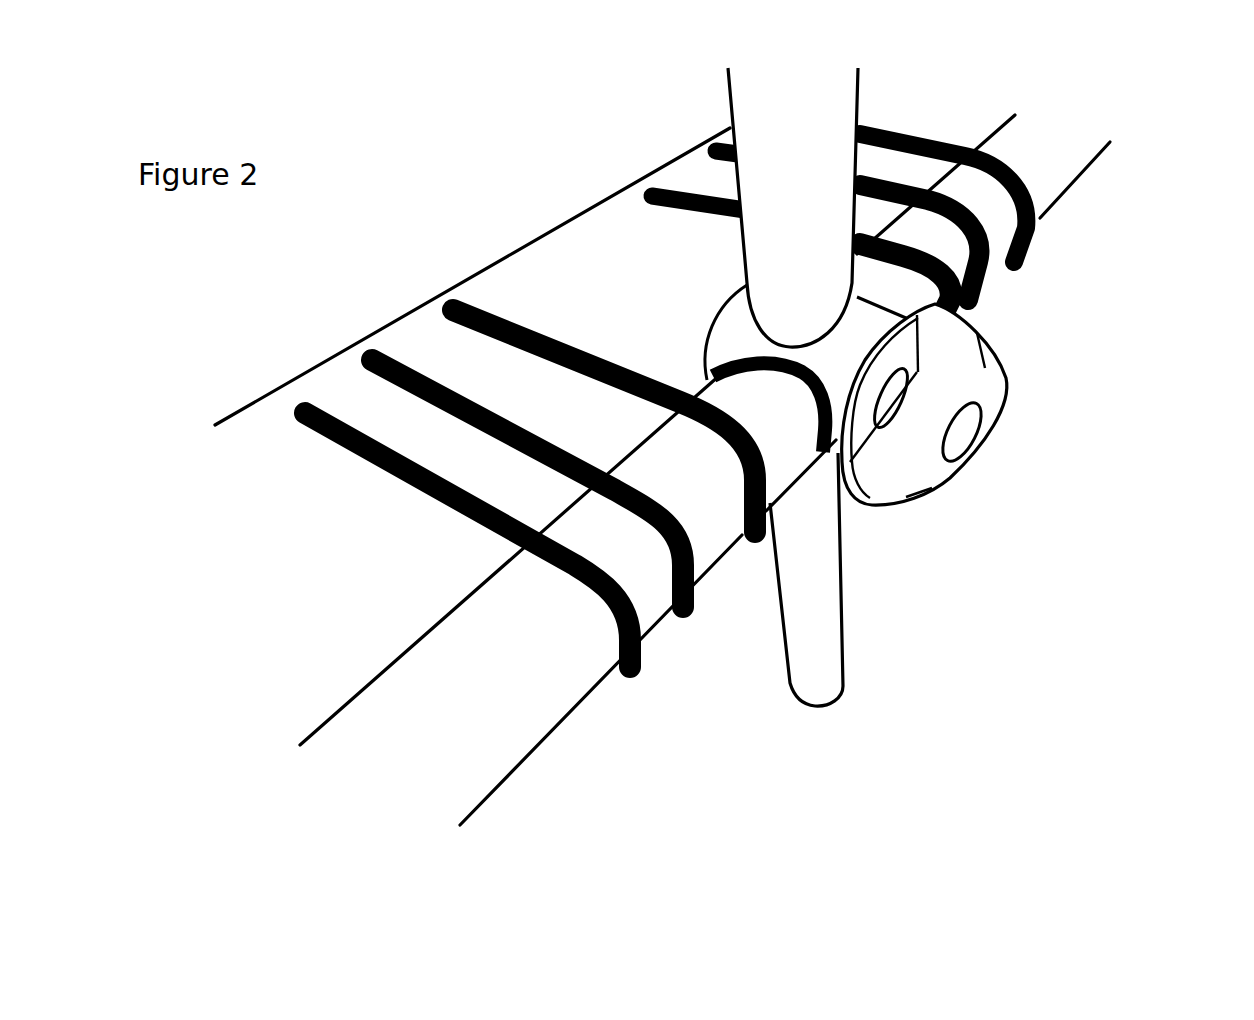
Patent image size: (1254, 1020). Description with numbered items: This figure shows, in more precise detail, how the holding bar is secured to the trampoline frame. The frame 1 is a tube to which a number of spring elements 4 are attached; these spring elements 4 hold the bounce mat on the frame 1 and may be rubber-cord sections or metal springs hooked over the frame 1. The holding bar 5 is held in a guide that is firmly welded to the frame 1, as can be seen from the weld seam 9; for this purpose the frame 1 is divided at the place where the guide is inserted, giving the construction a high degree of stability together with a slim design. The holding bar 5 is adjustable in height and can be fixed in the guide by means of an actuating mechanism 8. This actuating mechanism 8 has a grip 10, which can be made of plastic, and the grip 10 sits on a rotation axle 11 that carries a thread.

The frame 1 is at (1066, 156).
The spring elements 4 is at (636, 670).
The holding bar 5 is at (826, 645).
The actuating mechanism 8 is at (1020, 404).
The weld seam 9 is at (730, 361).
The grip 10 is at (987, 392).
The rotation axle 11 is at (987, 455).